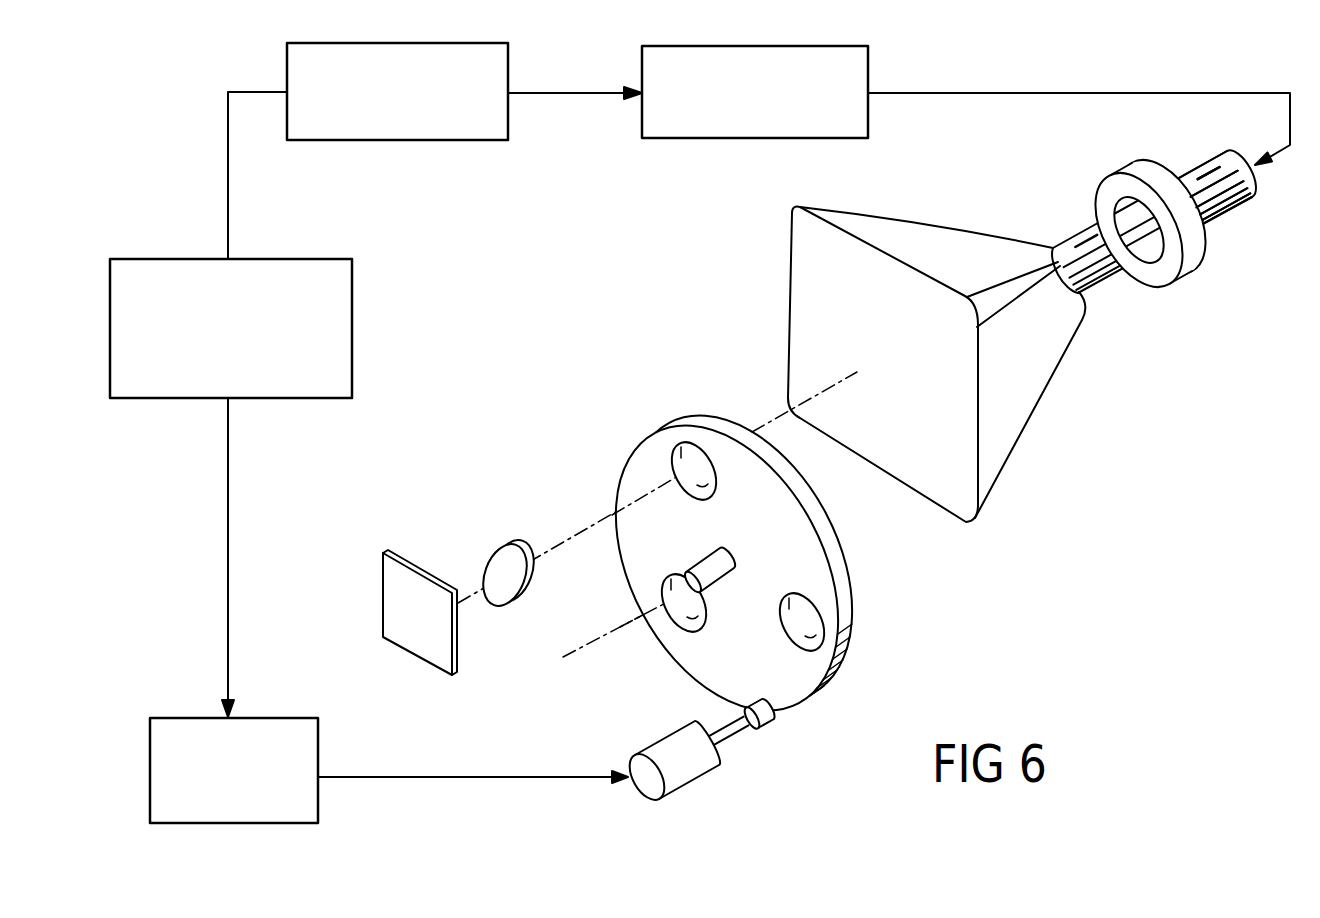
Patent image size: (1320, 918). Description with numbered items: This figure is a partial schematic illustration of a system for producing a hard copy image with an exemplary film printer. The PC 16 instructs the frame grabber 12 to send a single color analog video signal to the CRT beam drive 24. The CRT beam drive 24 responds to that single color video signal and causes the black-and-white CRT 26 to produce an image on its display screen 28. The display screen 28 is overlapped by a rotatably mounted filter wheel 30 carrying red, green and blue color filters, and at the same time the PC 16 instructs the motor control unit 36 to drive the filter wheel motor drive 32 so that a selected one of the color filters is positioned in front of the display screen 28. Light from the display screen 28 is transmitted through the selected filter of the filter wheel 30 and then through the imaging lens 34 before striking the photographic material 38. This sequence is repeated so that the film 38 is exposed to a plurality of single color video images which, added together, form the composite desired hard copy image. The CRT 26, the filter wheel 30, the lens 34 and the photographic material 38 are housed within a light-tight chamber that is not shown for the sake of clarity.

The frame grabber 12 is at (428, 140).
The PC 16 is at (287, 259).
The CRT beam drive 24 is at (737, 139).
The black-and-white CRT 26 is at (968, 233).
The display screen 28 is at (928, 460).
The filter wheel 30 is at (708, 424).
The filter wheel motor drive 32 is at (653, 742).
The imaging lens 34 is at (517, 545).
The motor control unit 36 is at (294, 717).
The photographic material 38 is at (425, 575).